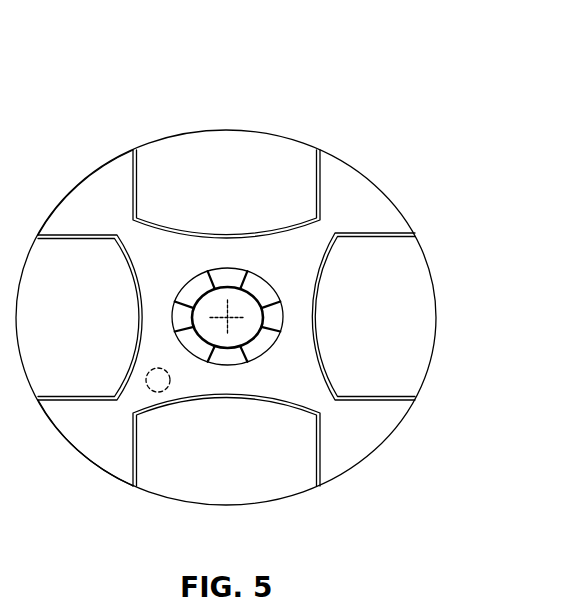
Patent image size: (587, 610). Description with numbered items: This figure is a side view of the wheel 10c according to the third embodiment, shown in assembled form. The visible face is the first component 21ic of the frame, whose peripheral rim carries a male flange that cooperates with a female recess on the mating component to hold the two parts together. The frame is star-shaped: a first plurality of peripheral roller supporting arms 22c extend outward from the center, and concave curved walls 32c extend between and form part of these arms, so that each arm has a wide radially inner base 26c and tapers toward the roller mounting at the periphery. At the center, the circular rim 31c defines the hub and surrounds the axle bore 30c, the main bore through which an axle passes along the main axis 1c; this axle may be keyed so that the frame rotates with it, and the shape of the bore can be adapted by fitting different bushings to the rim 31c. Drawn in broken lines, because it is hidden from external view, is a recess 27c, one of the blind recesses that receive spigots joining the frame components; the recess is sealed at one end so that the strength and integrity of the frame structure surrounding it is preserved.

The wheel 10c is at (363, 135).
The first component 21ic is at (104, 147).
The first plurality of peripheral roller supporting arms 22c is at (110, 430).
The rim 31c is at (193, 250).
The concave curved wall 32c is at (327, 307).
The radially inner base 26c is at (405, 316).
The axle bore 30c is at (233, 266).
The main axis 1c is at (235, 307).
The recess 27c is at (160, 392).